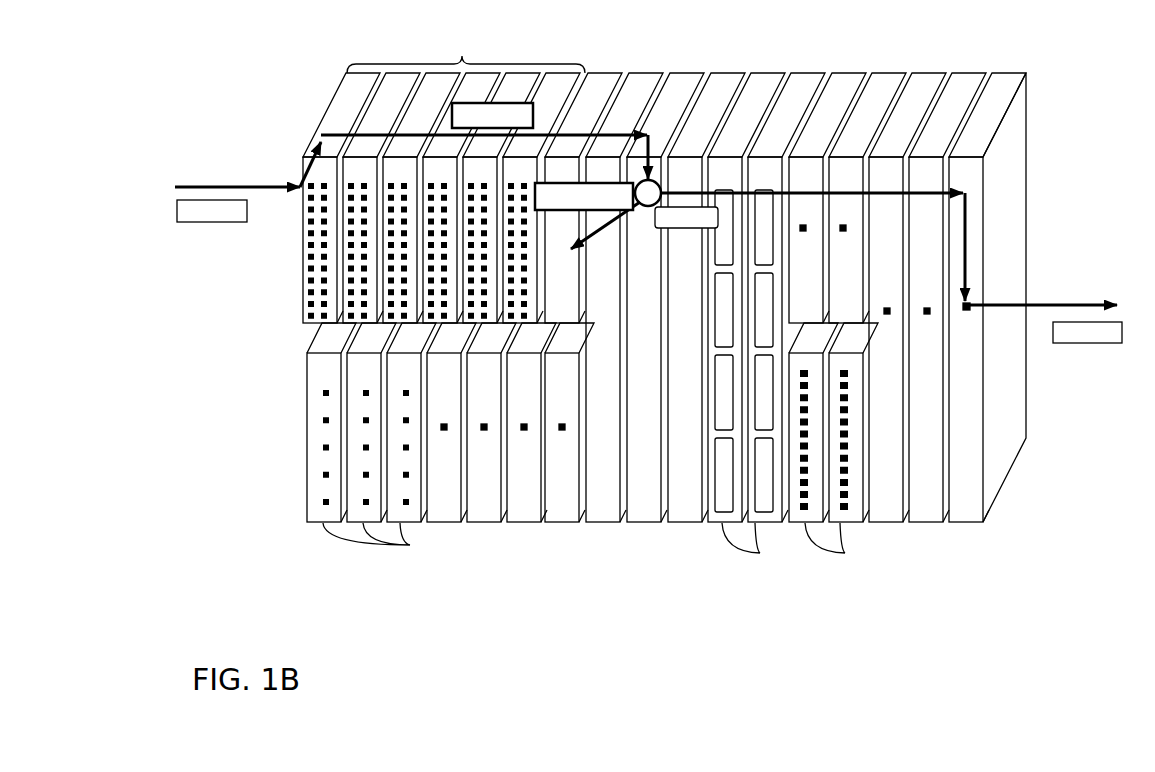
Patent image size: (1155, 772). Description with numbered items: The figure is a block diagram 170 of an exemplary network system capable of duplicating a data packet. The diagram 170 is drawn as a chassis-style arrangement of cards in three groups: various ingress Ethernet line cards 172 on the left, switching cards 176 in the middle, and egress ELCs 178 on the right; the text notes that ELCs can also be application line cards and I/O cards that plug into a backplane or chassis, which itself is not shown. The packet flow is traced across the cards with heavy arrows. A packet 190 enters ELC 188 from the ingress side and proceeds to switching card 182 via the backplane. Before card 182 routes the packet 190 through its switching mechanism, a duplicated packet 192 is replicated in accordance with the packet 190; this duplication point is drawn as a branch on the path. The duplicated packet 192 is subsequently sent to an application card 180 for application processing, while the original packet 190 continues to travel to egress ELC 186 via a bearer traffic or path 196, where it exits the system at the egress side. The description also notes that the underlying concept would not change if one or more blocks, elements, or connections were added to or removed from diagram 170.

The block diagram 170 is at (596, 645).
The ingress Ethernet line cards 172 is at (580, 557).
The switching cards 176 is at (705, 557).
The egress Ethernet line cards 178 is at (983, 557).
The application card 180 is at (576, 301).
The switching card 182 is at (658, 275).
The egress ELC 186 is at (980, 341).
The ELC 188 is at (298, 183).
The packet 190 is at (207, 222).
The duplicated packet 192 is at (562, 165).
The bearer traffic or path 196 is at (446, 120).